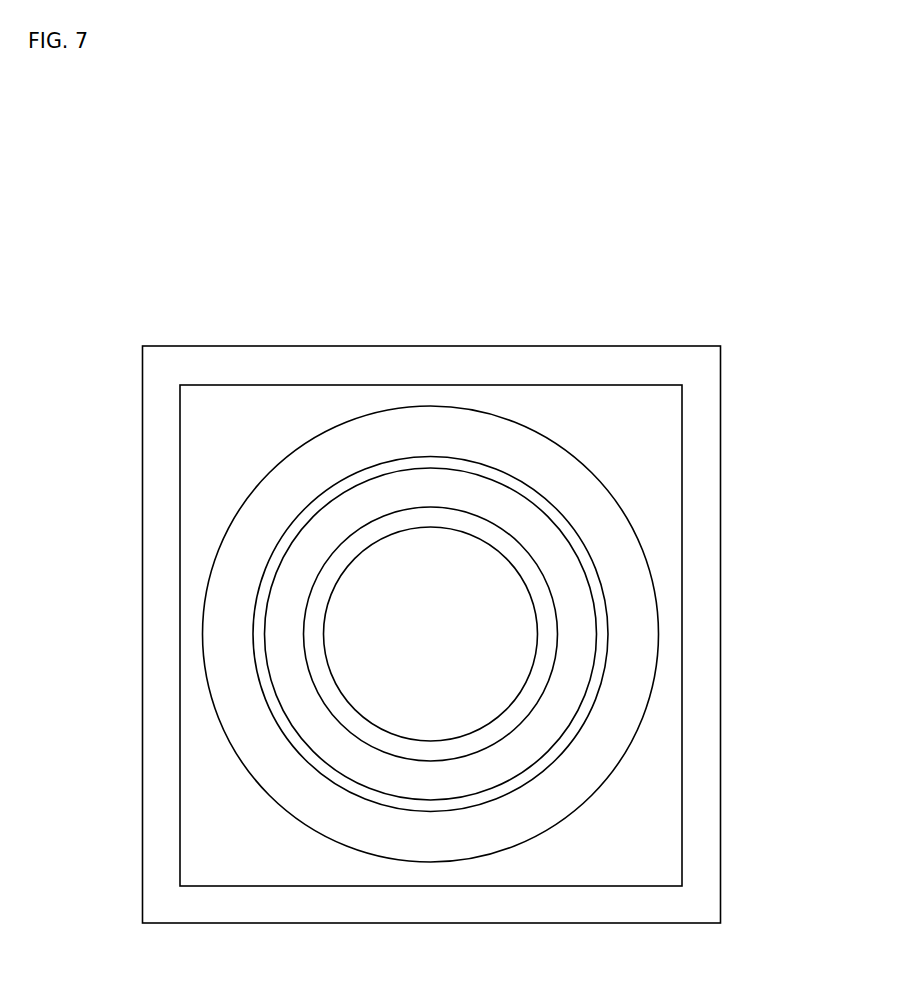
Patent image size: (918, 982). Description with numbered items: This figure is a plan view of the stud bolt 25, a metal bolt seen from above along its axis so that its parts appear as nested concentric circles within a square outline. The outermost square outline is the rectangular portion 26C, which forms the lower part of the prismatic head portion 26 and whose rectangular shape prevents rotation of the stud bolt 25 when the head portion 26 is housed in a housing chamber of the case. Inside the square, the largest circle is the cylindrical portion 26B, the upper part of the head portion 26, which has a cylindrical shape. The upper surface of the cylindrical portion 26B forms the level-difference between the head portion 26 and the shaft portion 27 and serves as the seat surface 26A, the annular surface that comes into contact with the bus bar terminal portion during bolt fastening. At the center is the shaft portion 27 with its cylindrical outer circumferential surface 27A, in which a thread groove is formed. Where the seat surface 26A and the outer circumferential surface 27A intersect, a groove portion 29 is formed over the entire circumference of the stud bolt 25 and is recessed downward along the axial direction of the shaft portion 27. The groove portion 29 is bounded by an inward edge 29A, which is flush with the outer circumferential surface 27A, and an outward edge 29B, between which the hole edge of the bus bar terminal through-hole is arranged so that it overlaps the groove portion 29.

The stud bolt 25 is at (567, 223).
The head portion 26 is at (610, 473).
The seat surface 26A is at (630, 695).
The cylindrical portion 26B is at (337, 427).
The rectangular portion 26C is at (458, 345).
The shaft portion 27 is at (527, 488).
The outer circumferential surface 27A is at (548, 515).
The groove portion 29 is at (588, 566).
The inward edge 29A is at (593, 597).
The outward edge 29B is at (605, 618).